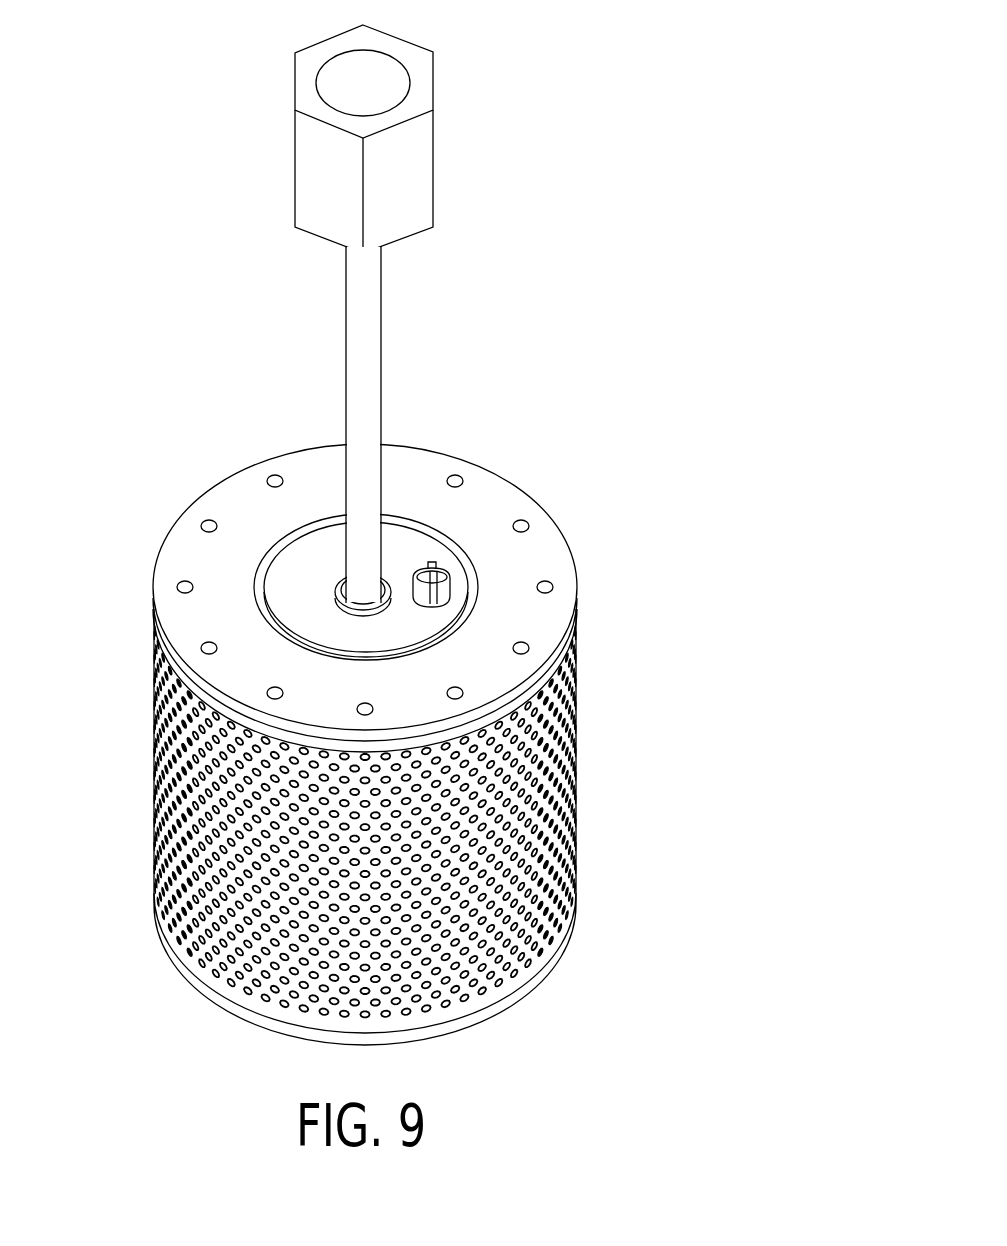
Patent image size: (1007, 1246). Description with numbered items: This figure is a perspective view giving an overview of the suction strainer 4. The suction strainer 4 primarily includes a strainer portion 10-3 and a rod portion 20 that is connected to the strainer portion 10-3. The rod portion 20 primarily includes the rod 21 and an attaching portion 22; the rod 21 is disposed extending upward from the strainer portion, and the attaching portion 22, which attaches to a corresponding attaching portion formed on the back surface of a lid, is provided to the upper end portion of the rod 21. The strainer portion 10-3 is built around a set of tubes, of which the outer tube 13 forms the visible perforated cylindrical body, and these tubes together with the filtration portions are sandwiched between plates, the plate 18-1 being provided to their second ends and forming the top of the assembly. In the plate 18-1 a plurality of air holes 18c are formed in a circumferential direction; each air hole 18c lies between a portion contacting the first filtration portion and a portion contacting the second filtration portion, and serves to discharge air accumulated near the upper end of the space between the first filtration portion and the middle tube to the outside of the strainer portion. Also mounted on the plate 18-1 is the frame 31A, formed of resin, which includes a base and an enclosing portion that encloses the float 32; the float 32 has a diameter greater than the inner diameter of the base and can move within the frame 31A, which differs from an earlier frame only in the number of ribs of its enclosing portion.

The suction strainer 4 is at (632, 37).
The strainer portion 10-3 is at (672, 575).
The outer tube 13 is at (570, 822).
The plate 18-1 is at (260, 513).
The air hole 18c is at (217, 657).
The rod portion 20 is at (500, 265).
The rod 21 is at (373, 360).
The attaching portion 22 is at (422, 168).
The frame 31A is at (437, 563).
The float 32 is at (450, 573).